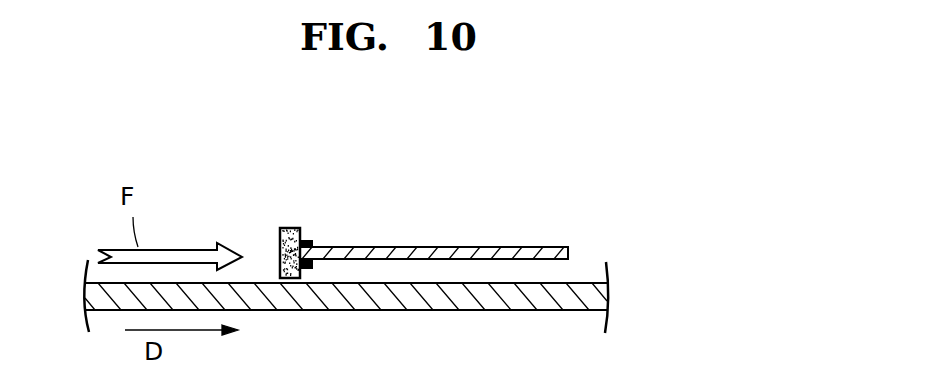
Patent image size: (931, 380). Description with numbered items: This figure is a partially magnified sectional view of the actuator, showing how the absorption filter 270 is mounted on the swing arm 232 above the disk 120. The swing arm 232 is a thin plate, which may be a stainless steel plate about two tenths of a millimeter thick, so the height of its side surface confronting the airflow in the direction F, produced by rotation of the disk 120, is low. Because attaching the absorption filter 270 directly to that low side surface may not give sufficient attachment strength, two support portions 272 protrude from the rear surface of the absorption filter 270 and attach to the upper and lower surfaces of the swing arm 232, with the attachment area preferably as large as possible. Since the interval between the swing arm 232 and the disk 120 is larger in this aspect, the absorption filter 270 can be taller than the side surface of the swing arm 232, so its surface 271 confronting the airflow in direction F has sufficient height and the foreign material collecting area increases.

The disk 120 is at (395, 295).
The swing arm 232 is at (502, 250).
The absorption filter 270 is at (289, 228).
The surface of the absorption filter 271 is at (280, 244).
The support portions 272 is at (313, 240).